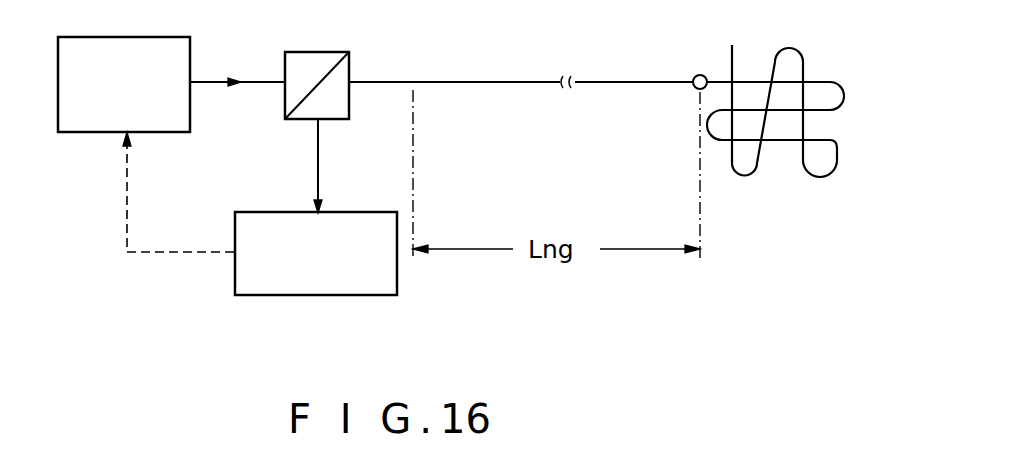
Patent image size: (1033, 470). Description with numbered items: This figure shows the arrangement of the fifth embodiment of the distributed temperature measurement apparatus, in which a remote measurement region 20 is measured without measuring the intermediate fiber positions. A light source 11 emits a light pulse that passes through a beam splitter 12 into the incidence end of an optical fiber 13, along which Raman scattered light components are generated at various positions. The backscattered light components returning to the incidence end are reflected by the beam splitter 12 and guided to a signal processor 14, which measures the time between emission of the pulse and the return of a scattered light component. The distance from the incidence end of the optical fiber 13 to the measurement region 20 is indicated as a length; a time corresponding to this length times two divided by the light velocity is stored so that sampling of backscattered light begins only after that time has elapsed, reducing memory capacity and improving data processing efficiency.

The light source 11 is at (190, 51).
The beam splitter 12 is at (349, 58).
The optical fiber 13 is at (505, 80).
The signal processor 14 is at (314, 297).
The measurement region 20 is at (822, 121).